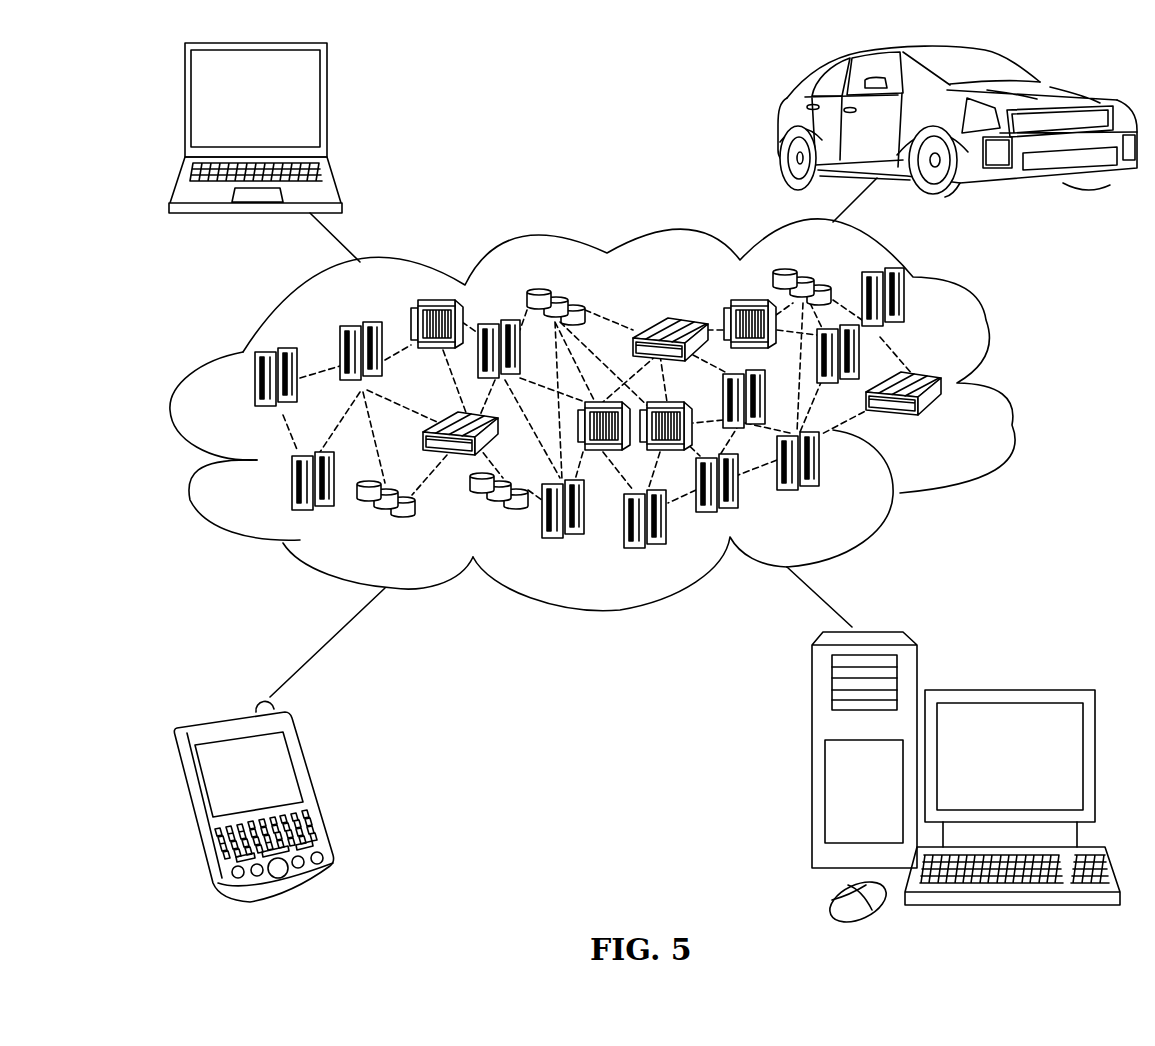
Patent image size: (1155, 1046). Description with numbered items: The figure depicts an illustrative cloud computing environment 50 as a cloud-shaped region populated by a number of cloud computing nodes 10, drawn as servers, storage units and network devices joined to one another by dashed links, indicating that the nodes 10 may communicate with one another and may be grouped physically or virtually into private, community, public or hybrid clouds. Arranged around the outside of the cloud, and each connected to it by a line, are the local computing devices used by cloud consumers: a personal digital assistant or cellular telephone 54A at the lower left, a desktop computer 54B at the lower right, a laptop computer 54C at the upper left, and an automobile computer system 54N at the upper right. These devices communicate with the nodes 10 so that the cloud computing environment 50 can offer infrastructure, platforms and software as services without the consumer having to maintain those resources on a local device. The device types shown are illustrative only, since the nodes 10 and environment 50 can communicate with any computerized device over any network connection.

The cloud computing node 10 is at (948, 422).
The cloud computing environment 50 is at (1008, 390).
The personal digital assistant or cellular telephone 54A is at (317, 786).
The desktop computer 54B is at (1008, 690).
The laptop computer 54C is at (327, 108).
The automobile computer system 54N is at (778, 122).